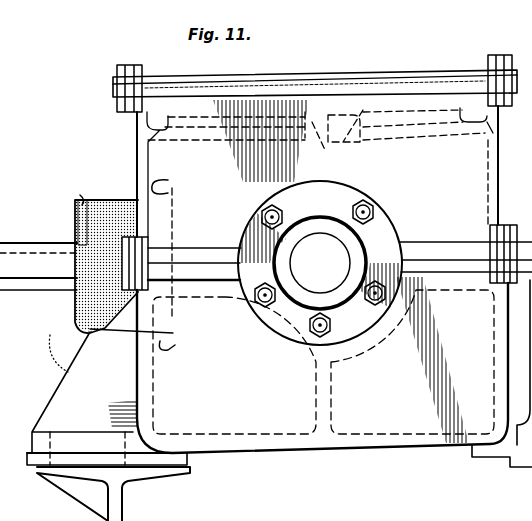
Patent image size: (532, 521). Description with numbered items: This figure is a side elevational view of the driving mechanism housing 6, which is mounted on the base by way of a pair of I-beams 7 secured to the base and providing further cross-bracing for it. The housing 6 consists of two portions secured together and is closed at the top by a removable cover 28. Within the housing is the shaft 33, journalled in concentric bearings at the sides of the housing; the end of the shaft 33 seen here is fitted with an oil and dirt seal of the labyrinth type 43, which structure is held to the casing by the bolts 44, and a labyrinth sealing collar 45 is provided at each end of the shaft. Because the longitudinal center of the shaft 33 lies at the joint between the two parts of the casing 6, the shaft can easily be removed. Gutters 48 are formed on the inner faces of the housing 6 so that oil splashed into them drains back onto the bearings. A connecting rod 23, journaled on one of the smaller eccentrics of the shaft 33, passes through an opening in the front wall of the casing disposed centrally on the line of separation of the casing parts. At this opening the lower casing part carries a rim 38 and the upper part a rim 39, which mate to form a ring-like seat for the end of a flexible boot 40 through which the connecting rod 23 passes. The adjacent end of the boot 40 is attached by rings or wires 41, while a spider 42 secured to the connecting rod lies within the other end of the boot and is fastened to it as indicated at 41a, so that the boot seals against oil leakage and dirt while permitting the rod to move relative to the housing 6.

The removable cover 28 is at (343, 72).
The connecting rod 23 is at (12, 290).
The driving mechanism housing 6 is at (201, 263).
The flexible boot 40 is at (111, 267).
The spider 42 is at (75, 233).
The boot attachment to spider 41a is at (82, 198).
The rings or wires 41 is at (158, 181).
The rim 39 is at (174, 185).
The gutter 48 is at (325, 150).
The rim 38 is at (177, 349).
The shaft 33 is at (320, 263).
The bolts 44 is at (377, 214).
The labyrinth sealing collar 45 is at (297, 300).
The labyrinth type oil and dirt seal 43 is at (396, 252).
The I-beam 7 is at (118, 507).